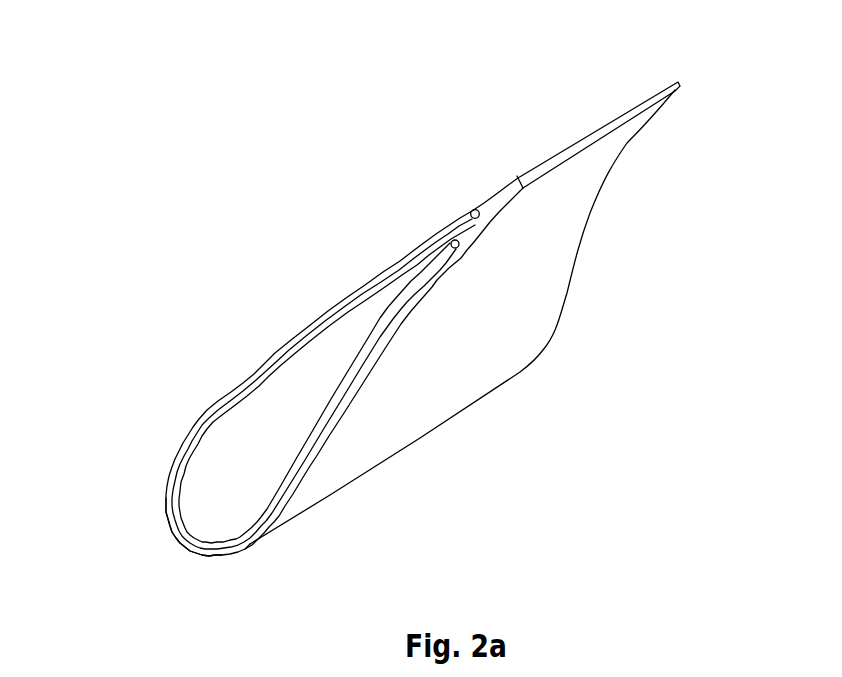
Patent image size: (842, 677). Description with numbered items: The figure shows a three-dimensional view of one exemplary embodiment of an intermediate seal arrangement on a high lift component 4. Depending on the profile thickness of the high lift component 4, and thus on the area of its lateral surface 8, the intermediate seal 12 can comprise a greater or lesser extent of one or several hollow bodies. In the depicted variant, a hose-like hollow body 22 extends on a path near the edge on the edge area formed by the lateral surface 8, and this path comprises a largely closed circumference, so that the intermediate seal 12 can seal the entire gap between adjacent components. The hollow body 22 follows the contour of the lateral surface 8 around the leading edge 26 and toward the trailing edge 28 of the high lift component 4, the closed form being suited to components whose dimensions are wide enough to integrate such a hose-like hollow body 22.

The high lift component 4 is at (337, 261).
The lateral surface 8 is at (243, 501).
The intermediate seal 12 is at (187, 520).
The hollow body 22 is at (249, 396).
The leading edge 26 is at (178, 554).
The trailing edge 28 is at (532, 158).